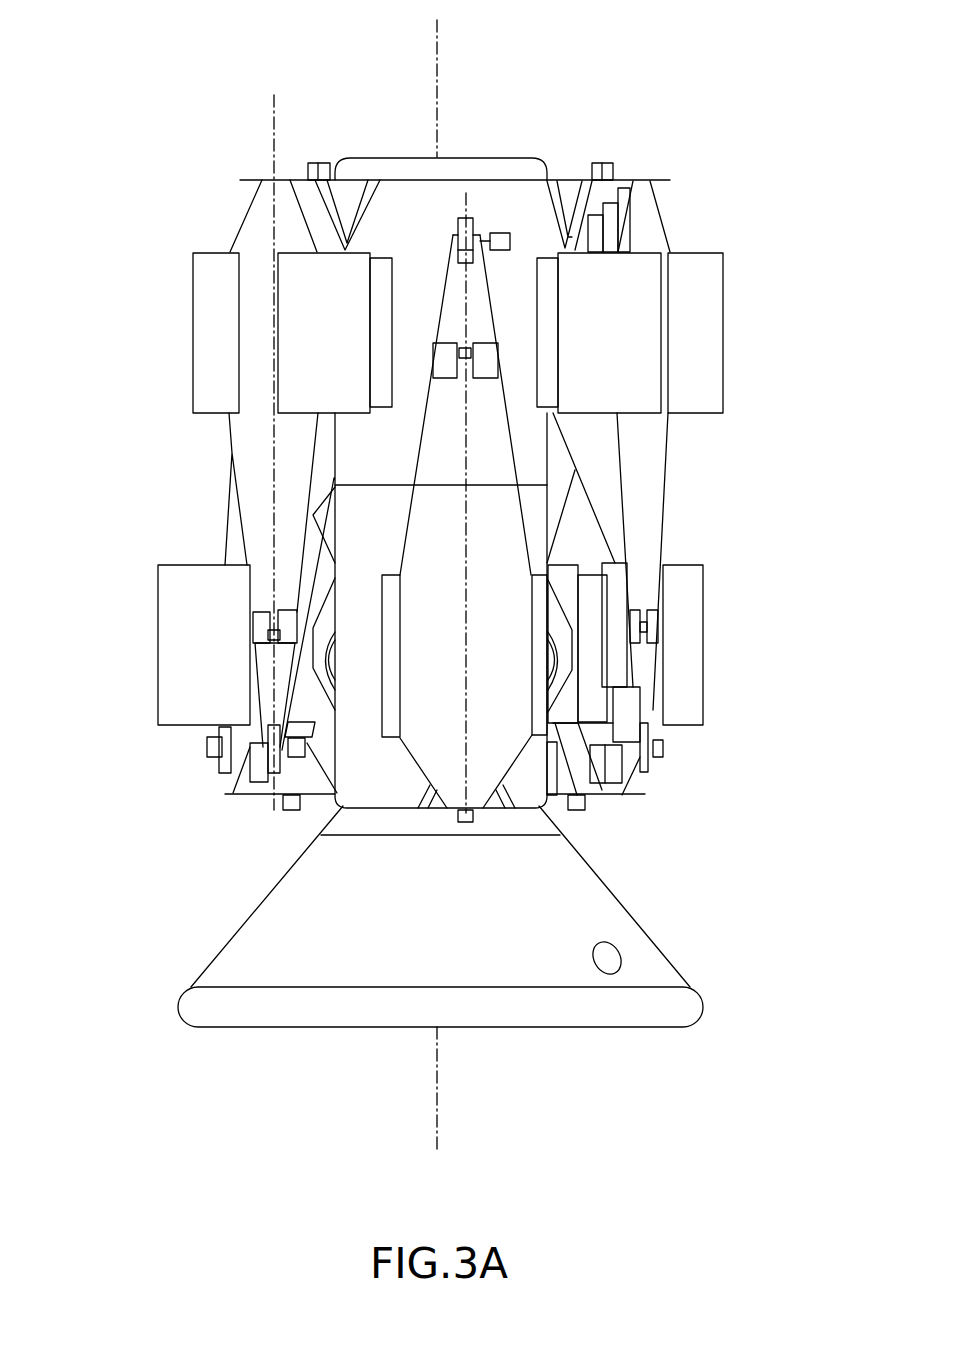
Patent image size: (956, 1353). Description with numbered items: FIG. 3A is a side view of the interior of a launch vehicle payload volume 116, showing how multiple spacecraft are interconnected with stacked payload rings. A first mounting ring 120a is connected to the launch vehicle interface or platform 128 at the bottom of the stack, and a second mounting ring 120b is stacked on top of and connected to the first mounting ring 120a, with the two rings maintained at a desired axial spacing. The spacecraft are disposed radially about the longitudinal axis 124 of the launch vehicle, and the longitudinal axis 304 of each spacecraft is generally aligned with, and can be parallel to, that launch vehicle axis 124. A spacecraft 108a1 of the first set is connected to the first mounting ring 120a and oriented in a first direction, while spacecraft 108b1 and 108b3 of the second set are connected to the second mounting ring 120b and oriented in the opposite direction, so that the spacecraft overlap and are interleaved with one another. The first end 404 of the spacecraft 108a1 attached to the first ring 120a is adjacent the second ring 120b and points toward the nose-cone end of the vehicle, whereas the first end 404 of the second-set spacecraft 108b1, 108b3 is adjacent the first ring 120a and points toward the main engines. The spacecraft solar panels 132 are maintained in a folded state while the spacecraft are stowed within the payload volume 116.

The payload volume 116 is at (663, 157).
The longitudinal axis of the launch vehicle 124 is at (437, 47).
The longitudinal axis of the spacecraft 304 is at (275, 125).
The second mounting ring 120b is at (530, 168).
The first mounting ring 120a is at (318, 795).
The first end of the spacecraft 404 is at (470, 215).
The spacecraft solar panels 132 is at (200, 328).
The spacecraft of the second set 108b1 is at (655, 510).
The spacecraft of the second set 108b3 is at (260, 500).
The spacecraft of the first set 108a1 is at (465, 627).
The launch vehicle interface or platform 128 is at (588, 893).